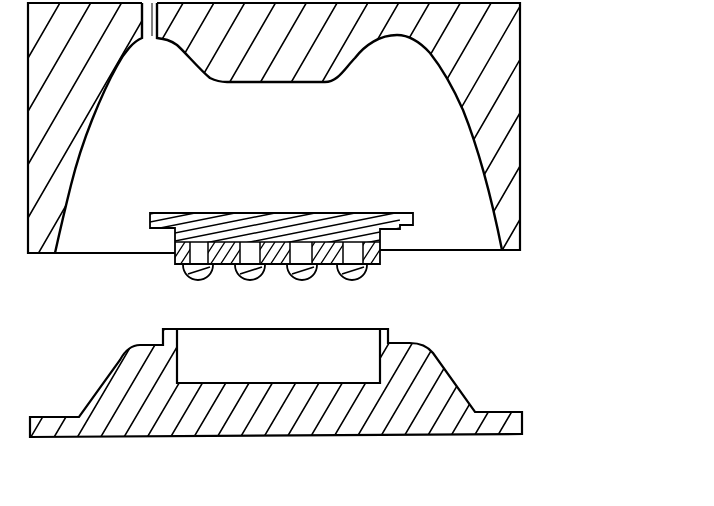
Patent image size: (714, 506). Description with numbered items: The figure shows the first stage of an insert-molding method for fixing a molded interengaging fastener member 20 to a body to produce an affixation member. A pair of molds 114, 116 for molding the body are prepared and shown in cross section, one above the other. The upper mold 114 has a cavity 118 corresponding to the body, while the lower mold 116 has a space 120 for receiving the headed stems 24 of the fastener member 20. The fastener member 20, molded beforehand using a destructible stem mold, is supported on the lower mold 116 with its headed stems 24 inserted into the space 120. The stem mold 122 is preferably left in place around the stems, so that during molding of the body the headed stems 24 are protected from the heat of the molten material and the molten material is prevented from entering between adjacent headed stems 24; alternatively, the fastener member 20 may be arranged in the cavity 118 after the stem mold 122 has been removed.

The mold 114 is at (510, 56).
The mold 116 is at (442, 380).
The cavity 118 is at (62, 217).
The space 120 is at (378, 343).
The stem mold 122 is at (385, 253).
The interengaging fastener member 20 is at (268, 200).
The headed stems 24 is at (224, 287).